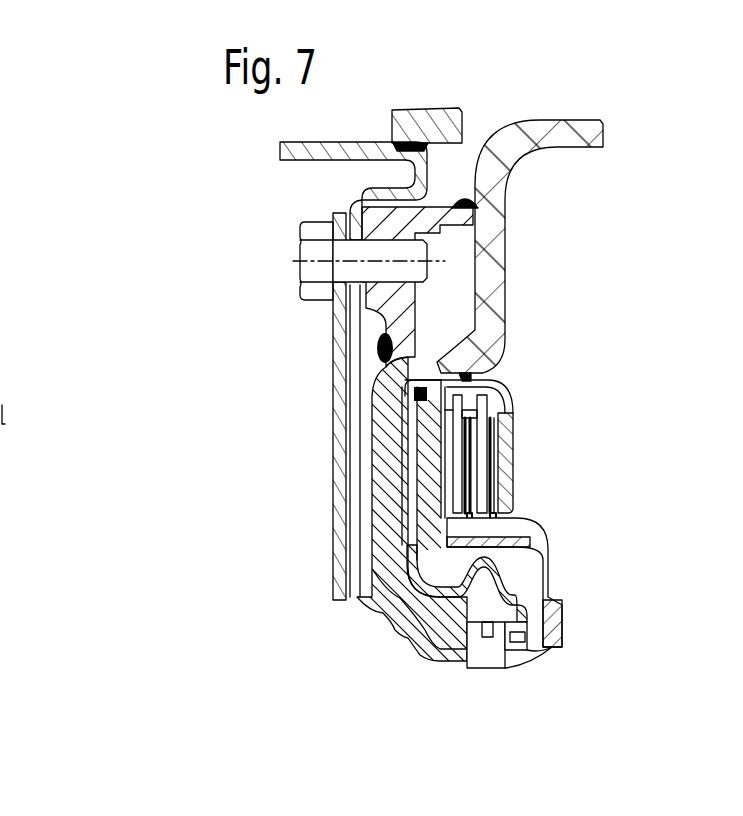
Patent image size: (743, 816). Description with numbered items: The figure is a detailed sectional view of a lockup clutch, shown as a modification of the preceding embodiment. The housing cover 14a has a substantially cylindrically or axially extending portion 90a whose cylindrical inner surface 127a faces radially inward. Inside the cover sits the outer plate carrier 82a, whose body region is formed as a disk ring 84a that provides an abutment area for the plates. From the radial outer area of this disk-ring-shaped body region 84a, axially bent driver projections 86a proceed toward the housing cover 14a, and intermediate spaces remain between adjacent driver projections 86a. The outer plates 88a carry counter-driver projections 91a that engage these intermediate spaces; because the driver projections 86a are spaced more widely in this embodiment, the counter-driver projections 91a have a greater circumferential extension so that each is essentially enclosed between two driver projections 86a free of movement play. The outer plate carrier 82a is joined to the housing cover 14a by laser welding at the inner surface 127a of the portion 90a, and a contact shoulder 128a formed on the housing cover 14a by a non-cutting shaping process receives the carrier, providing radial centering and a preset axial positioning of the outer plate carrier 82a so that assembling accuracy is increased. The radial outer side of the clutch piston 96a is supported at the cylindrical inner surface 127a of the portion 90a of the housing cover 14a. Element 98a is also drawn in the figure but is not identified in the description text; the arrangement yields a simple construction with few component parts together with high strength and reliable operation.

The housing cover 14a is at (632, 166).
The substantially cylindrically extending portion of the housing cover 90a is at (443, 352).
The contact shoulder 128a is at (468, 347).
The inner surface of the housing cover portion 127a is at (466, 375).
The driver projections 86a is at (493, 393).
The outer plate carrier 82a is at (513, 425).
The disk ring body region 84a is at (613, 432).
The outer plates 88a is at (480, 490).
The counter-driver projections 91a is at (457, 400).
The clutch piston 96a is at (397, 613).
The stop block 98a is at (495, 647).